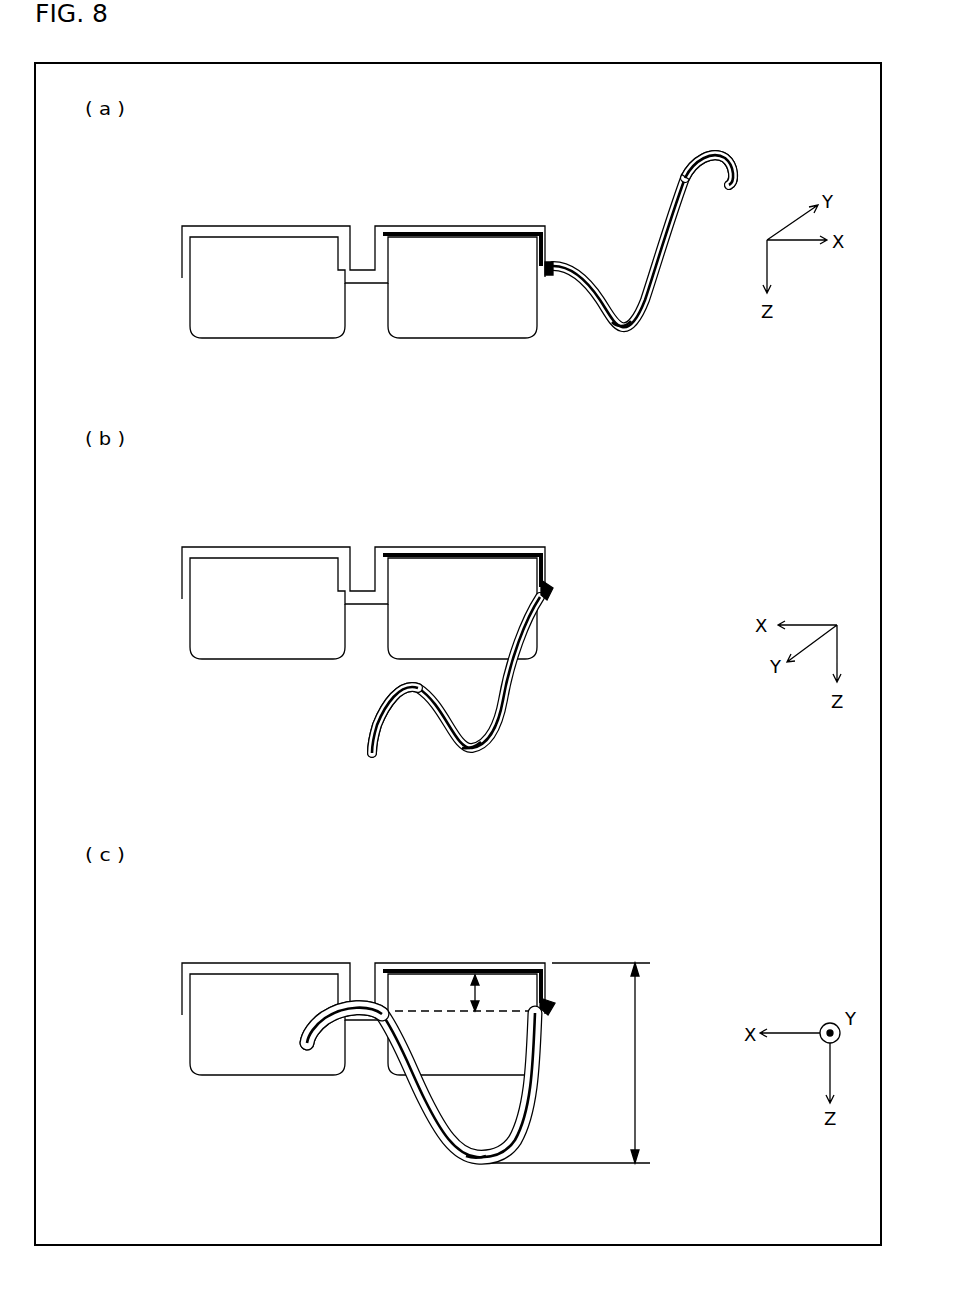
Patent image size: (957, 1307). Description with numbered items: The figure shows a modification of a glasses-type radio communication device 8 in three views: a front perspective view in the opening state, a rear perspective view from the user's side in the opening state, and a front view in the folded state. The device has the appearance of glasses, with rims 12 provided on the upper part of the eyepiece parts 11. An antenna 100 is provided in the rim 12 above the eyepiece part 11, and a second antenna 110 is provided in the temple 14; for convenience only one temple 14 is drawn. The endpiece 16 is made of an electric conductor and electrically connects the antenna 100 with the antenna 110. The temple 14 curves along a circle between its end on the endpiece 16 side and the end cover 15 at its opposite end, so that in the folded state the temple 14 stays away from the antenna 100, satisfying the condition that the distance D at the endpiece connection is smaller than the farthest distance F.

The glasses-type radio communication device 8 is at (457, 657).
The eyepiece part 11 is at (265, 340).
The rim 12 is at (265, 226).
The temple 14 is at (660, 280).
The end cover 15 is at (715, 150).
The endpiece 16 is at (549, 262).
The antenna 100 is at (460, 230).
The antenna 110 is at (618, 332).